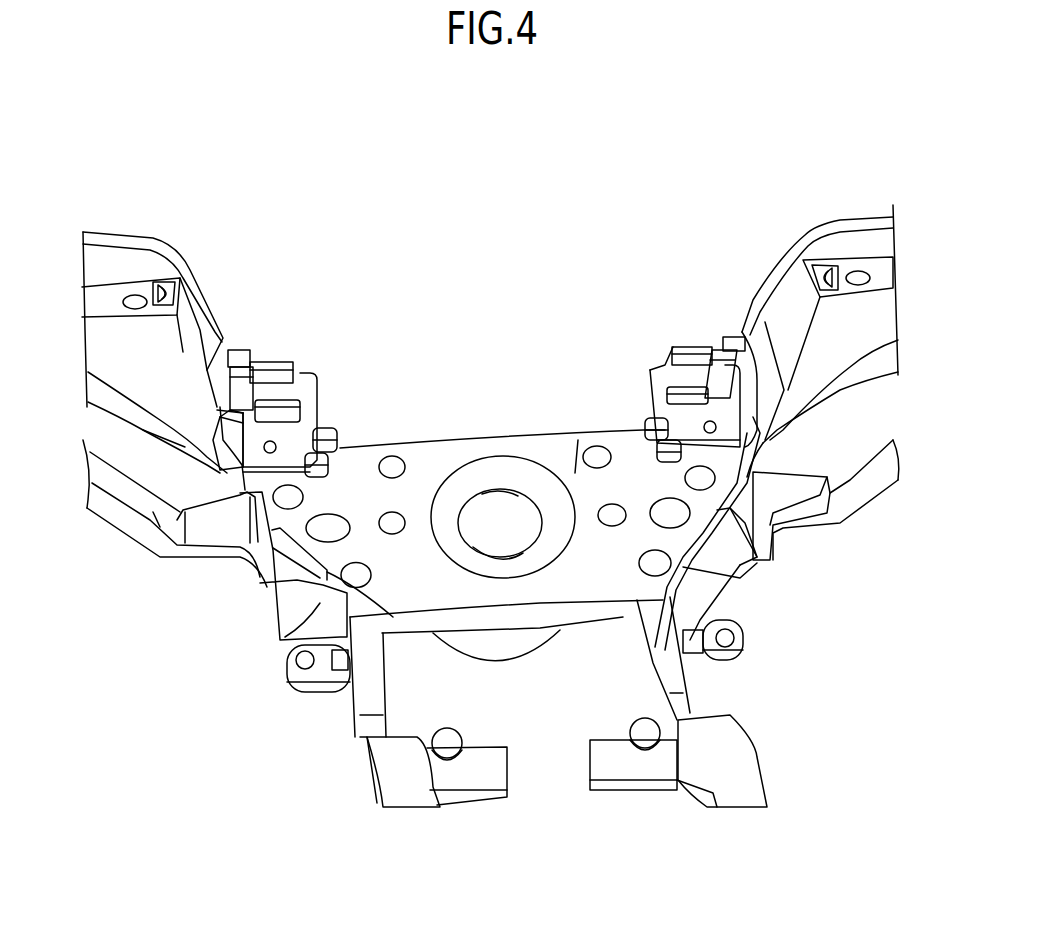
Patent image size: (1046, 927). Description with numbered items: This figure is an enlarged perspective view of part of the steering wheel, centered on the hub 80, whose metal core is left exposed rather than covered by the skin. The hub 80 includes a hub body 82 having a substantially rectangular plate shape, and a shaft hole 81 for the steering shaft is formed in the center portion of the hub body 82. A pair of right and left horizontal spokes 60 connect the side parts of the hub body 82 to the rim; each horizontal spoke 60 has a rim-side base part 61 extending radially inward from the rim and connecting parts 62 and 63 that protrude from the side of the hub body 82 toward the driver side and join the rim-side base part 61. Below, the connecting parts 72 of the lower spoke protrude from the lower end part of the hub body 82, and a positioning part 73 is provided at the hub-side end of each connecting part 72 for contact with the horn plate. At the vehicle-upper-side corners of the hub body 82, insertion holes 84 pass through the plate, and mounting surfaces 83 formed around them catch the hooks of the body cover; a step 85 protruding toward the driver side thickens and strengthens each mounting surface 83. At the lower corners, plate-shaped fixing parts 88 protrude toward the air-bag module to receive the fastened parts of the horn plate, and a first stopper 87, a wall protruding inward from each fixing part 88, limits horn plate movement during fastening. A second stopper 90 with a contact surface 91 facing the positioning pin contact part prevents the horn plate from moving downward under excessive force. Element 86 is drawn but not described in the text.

The horizontal spoke 60 is at (228, 218).
The rim-side base part 61 is at (160, 258).
The connecting part 62 is at (183, 432).
The connecting part 63 is at (148, 538).
The connecting part 72 is at (403, 783).
The positioning part 73 is at (443, 740).
The hub 80 is at (438, 442).
The shaft hole 81 is at (498, 498).
The hub body 82 is at (575, 473).
The mounting surface 83 is at (307, 400).
The insertion hole 84 is at (280, 403).
The step 85 is at (273, 370).
The leg 86 is at (385, 618).
The first stopper 87 is at (283, 641).
The fixing part 88 is at (265, 600).
The second stopper 90 is at (243, 377).
The contact surface 91 is at (238, 350).